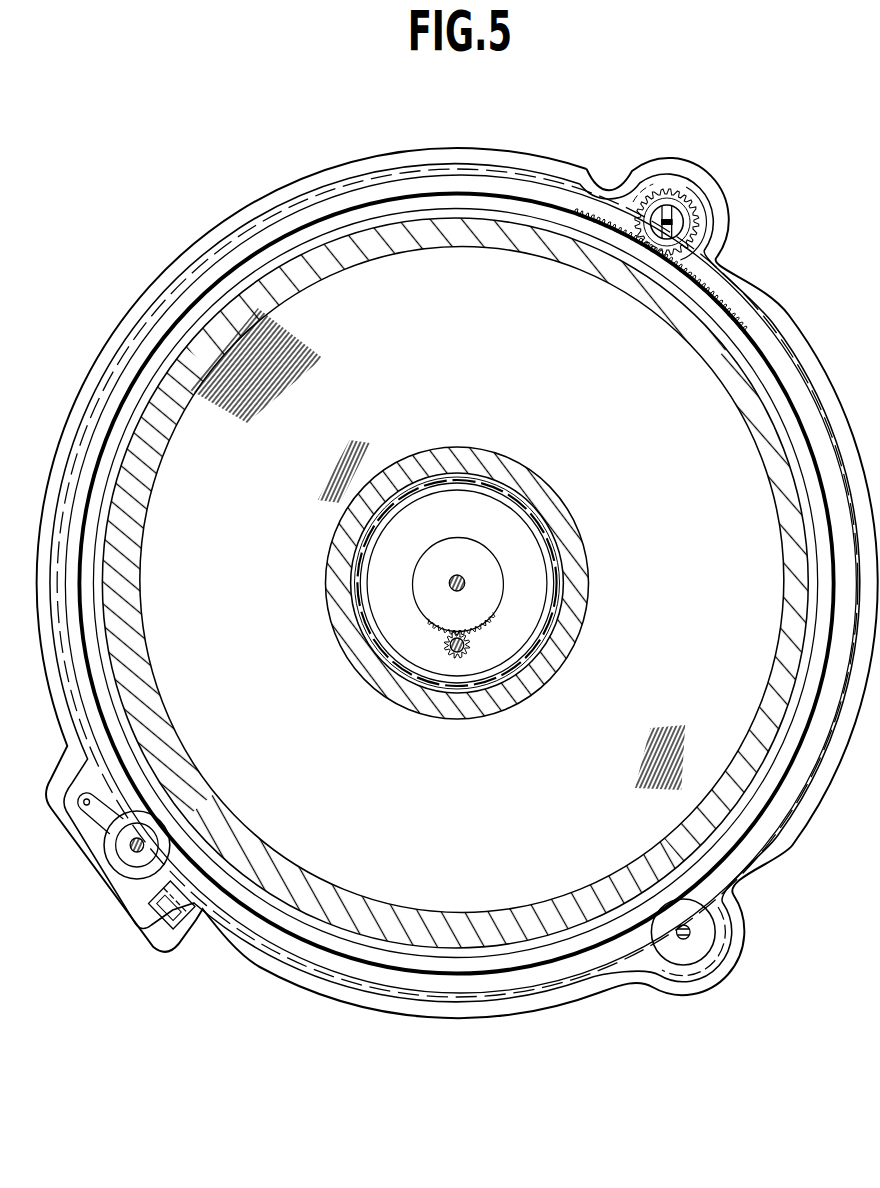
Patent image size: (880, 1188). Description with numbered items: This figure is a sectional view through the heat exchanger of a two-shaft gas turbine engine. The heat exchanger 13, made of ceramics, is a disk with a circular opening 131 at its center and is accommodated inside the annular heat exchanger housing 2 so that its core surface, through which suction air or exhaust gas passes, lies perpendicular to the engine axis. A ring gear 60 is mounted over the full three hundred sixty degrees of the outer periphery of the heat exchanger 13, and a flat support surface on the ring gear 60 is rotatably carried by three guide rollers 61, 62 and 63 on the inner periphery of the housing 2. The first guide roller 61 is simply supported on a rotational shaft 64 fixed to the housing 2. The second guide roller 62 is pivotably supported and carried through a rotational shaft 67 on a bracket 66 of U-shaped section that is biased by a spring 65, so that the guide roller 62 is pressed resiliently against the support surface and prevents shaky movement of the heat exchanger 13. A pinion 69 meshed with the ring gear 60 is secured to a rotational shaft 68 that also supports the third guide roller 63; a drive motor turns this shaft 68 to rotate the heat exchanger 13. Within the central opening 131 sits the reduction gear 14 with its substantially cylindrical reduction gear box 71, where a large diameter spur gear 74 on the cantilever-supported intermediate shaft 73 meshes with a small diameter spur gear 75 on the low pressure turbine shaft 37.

The heat exchanger housing 2 is at (457, 583).
The heat exchanger 13 is at (440, 594).
The reduction gear 14 is at (491, 583).
The low pressure turbine shaft 37 is at (438, 658).
The ring gear 60 is at (455, 583).
The first guide roller 61 is at (713, 932).
The second guide roller 62 is at (92, 853).
The third guide roller 63 is at (698, 222).
The rotational shaft 64 is at (674, 961).
The spring 65 is at (179, 929).
The bracket 66 is at (218, 872).
The rotational shaft 67 is at (100, 845).
The rotational shaft 68 is at (653, 185).
The pinion 69 is at (696, 214).
The reduction gear box 71 is at (456, 583).
The intermediate shaft 73 is at (456, 547).
The large diameter spur gear 74 is at (450, 598).
The small diameter spur gear 75 is at (475, 641).
The circular opening 131 is at (456, 583).